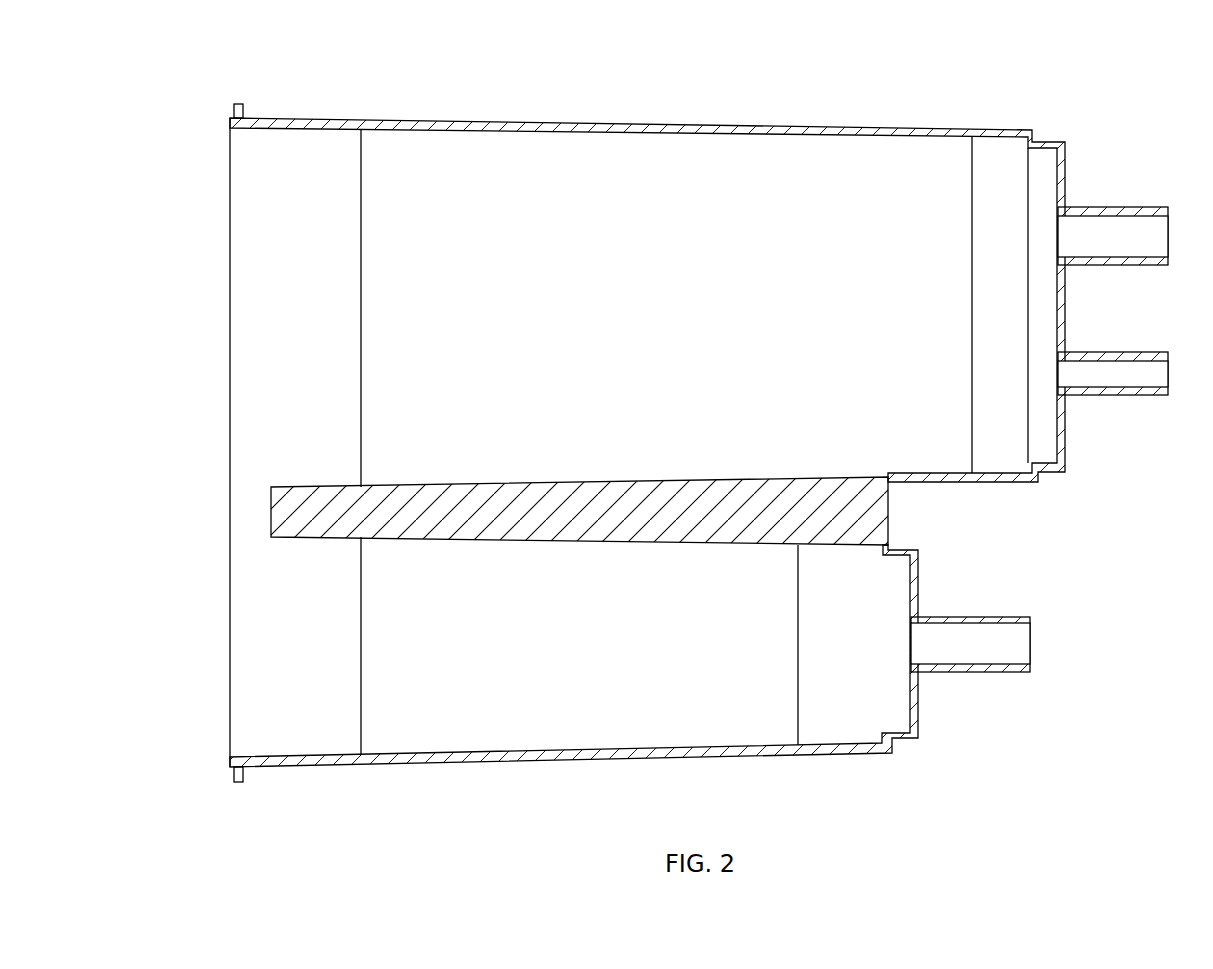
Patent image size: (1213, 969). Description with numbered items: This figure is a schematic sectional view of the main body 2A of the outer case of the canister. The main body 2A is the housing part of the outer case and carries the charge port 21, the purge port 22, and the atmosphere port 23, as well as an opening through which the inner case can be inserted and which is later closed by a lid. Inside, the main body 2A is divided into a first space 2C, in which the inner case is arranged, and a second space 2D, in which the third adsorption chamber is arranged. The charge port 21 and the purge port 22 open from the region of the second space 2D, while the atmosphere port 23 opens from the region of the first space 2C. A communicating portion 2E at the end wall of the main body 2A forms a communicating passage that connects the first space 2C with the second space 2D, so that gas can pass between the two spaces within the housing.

The main body 2A is at (838, 130).
The first space 2C is at (547, 730).
The second space 2D is at (478, 150).
The communicating portion 2E is at (248, 512).
The charge port 21 is at (1140, 232).
The purge port 22 is at (1140, 372).
The atmosphere port 23 is at (1004, 638).